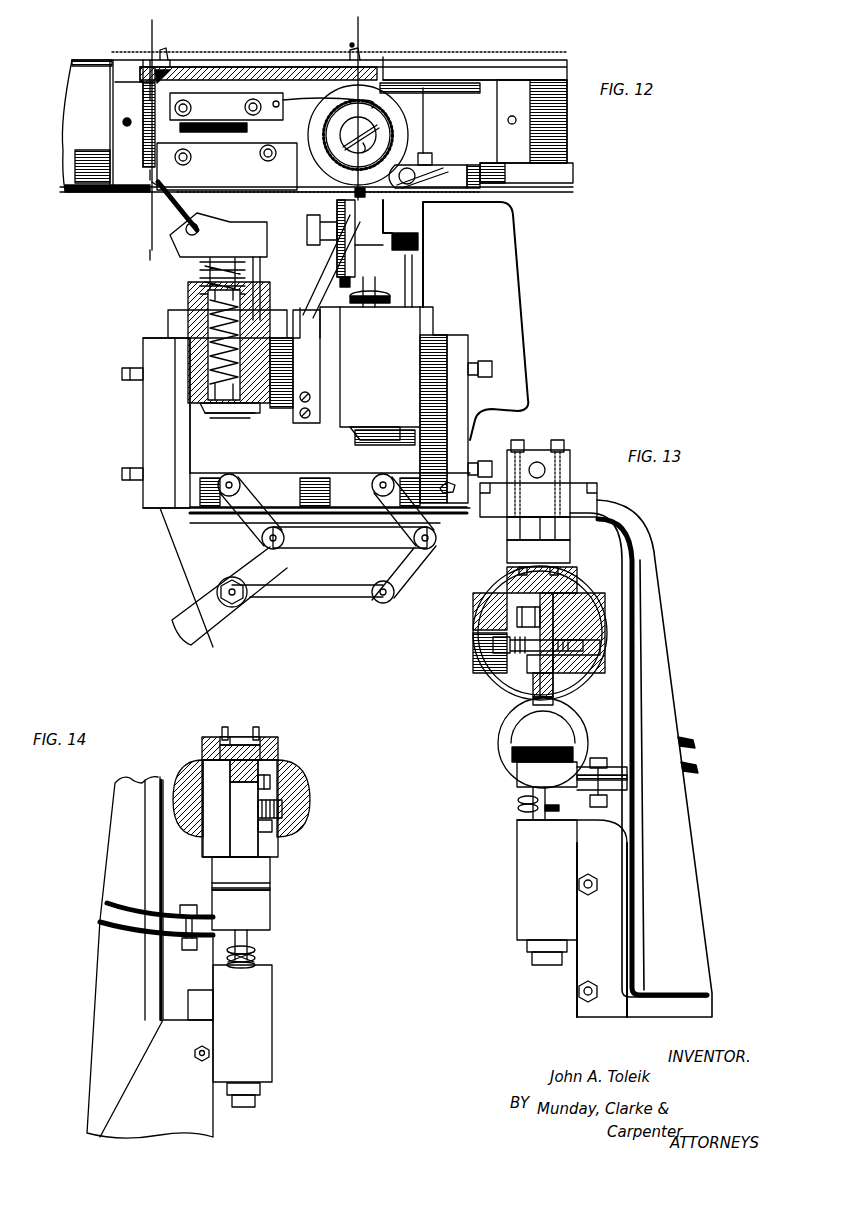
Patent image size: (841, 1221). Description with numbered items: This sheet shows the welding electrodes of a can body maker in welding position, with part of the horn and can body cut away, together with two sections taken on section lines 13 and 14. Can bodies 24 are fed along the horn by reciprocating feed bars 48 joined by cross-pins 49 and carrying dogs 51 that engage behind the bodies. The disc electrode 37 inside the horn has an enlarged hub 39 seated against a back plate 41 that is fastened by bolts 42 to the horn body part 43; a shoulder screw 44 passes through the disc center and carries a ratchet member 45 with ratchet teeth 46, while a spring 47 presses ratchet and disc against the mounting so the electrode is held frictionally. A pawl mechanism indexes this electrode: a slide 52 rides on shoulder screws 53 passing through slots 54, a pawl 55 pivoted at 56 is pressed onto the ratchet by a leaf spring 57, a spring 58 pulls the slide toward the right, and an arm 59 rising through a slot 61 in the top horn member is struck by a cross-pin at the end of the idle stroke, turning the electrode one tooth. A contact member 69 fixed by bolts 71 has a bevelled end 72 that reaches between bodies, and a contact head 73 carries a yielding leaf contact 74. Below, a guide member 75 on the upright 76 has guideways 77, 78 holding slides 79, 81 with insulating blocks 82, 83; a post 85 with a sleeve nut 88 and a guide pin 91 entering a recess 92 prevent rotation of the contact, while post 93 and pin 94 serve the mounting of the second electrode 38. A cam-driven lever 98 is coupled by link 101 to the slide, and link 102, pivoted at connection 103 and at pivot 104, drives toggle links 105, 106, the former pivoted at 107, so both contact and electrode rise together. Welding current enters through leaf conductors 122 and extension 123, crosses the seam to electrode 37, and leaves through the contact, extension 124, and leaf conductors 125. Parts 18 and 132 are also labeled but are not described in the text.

In FIG. 12, the section line 13 is at (343, 17).
In FIG. 12, the section line 14 is at (167, 247).
In FIG. 12, the rack 18 is at (367, 200).
In FIG. 12, the can bodies 24 is at (270, 57).
In FIG. 13, the can bodies 24 is at (478, 610).
In FIG. 12, the electrode 37 is at (398, 100).
In FIG. 13, the electrode 37 is at (545, 612).
In FIG. 12, the second electrode 38 is at (355, 245).
In FIG. 13, the second electrode 38 is at (505, 748).
In FIG. 13, the enlarged hub 39 is at (563, 617).
In FIG. 13, the back plate 41 is at (575, 630).
In FIG. 14, the back plate 41 is at (213, 802).
In FIG. 13, the bolts 42 is at (590, 650).
In FIG. 13, the horn body part 43 is at (598, 640).
In FIG. 12, the shoulder screw 44 is at (385, 140).
In FIG. 13, the shoulder screw 44 is at (490, 680).
In FIG. 12, the ratchet member 45 is at (390, 125).
In FIG. 13, the ratchet member 45 is at (535, 683).
In FIG. 12, the ratchet teeth 46 is at (390, 145).
In FIG. 13, the ratchet teeth 46 is at (553, 690).
In FIG. 13, the spring 47 is at (493, 650).
In FIG. 14, the spring 47 is at (280, 807).
In FIG. 14, the feed bars 48 is at (215, 737).
In FIG. 12, the cross-pins 49 is at (160, 60).
In FIG. 14, the cross-pins 49 is at (240, 737).
In FIG. 12, the dogs 51 is at (175, 45).
In FIG. 14, the dogs 51 is at (225, 727).
In FIG. 12, the reciprocating slide 52 is at (225, 93).
In FIG. 14, the reciprocating slide 52 is at (245, 782).
In FIG. 12, the shoulder screws 53 is at (185, 100).
In FIG. 14, the shoulder screws 53 is at (265, 782).
In FIG. 12, the slots 54 is at (150, 175).
In FIG. 12, the pawl 55 is at (365, 50).
In FIG. 13, the pawl 55 is at (520, 612).
In FIG. 12, the pivot 56 is at (192, 155).
In FIG. 12, the leaf spring 57 is at (300, 95).
In FIG. 12, the spring 58 is at (158, 185).
In FIG. 12, the arm 59 is at (150, 88).
In FIG. 14, the arm 59 is at (203, 770).
In FIG. 12, the slot 61 is at (140, 60).
In FIG. 12, the contact member 69 is at (238, 180).
In FIG. 14, the contact member 69 is at (270, 845).
In FIG. 12, the bolts 71 is at (268, 165).
In FIG. 14, the bolts 71 is at (275, 827).
In FIG. 12, the bevelled end 72 is at (165, 185).
In FIG. 12, the contact head 73 is at (192, 240).
In FIG. 14, the contact head 73 is at (265, 905).
In FIG. 12, the yielding contact 74 is at (170, 235).
In FIG. 14, the yielding contact 74 is at (270, 870).
In FIG. 12, the guide member 75 is at (180, 412).
In FIG. 13, the upright 76 is at (683, 858).
In FIG. 14, the upright 76 is at (117, 872).
In FIG. 12, the guideway 77 is at (190, 445).
In FIG. 12, the guideway 78 is at (440, 475).
In FIG. 12, the reciprocating slide 79 is at (200, 480).
In FIG. 12, the reciprocating slide 81 is at (410, 455).
In FIG. 12, the block 82 is at (188, 315).
In FIG. 14, the block 82 is at (265, 1015).
In FIG. 12, the block 83 is at (395, 335).
In FIG. 13, the block 83 is at (527, 895).
In FIG. 14, the post 85 is at (260, 935).
In FIG. 12, the sleeve nut 88 is at (228, 415).
In FIG. 14, the sleeve nut 88 is at (262, 958).
In FIG. 12, the guide pin 91 is at (253, 262).
In FIG. 12, the recess 92 is at (262, 280).
In FIG. 12, the post 93 is at (380, 280).
In FIG. 12, the pin 94 is at (415, 292).
In FIG. 13, the pin 94 is at (530, 800).
In FIG. 12, the lever 98 is at (243, 600).
In FIG. 12, the link 101 is at (245, 505).
In FIG. 12, the link 102 is at (348, 538).
In FIG. 12, the connection 103 is at (278, 545).
In FIG. 12, the pivot connection 104 is at (437, 538).
In FIG. 12, the toggle link 105 is at (415, 565).
In FIG. 12, the toggle link 106 is at (410, 518).
In FIG. 12, the pivot 107 is at (375, 598).
In FIG. 13, the flexible leaf conductors 122 is at (690, 770).
In FIG. 13, the arm or extension 123 is at (545, 823).
In FIG. 14, the extension 124 is at (187, 923).
In FIG. 12, the leaf conductors 125 is at (307, 320).
In FIG. 14, the leaf conductors 125 is at (105, 925).
In FIG. 12, the latch 132 is at (433, 165).